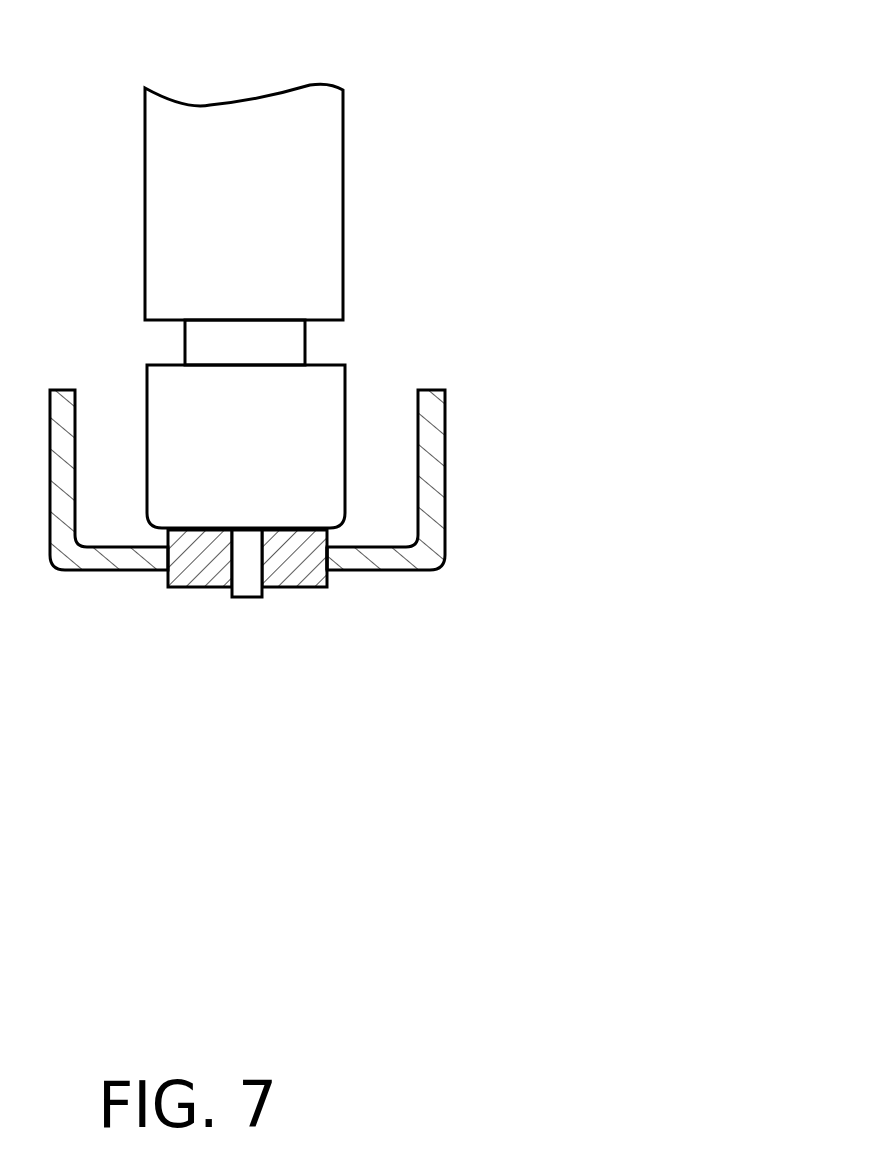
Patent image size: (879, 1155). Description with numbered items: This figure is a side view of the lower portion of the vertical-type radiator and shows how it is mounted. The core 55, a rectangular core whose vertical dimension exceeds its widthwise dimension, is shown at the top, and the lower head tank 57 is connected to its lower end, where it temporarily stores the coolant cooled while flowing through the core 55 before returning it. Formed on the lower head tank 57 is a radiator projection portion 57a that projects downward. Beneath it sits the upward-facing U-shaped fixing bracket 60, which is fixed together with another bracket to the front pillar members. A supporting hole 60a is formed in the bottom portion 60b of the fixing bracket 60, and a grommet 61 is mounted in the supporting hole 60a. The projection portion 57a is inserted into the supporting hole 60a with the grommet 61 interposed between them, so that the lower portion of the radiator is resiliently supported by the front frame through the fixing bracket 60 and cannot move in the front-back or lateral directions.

The core 55 is at (343, 185).
The lower head tank 57 is at (345, 397).
The radiator projection portion 57a is at (248, 597).
The fixing bracket 60 is at (368, 571).
The supporting hole 60a is at (218, 590).
The bottom portion 60b is at (375, 572).
The grommet 61 is at (298, 587).